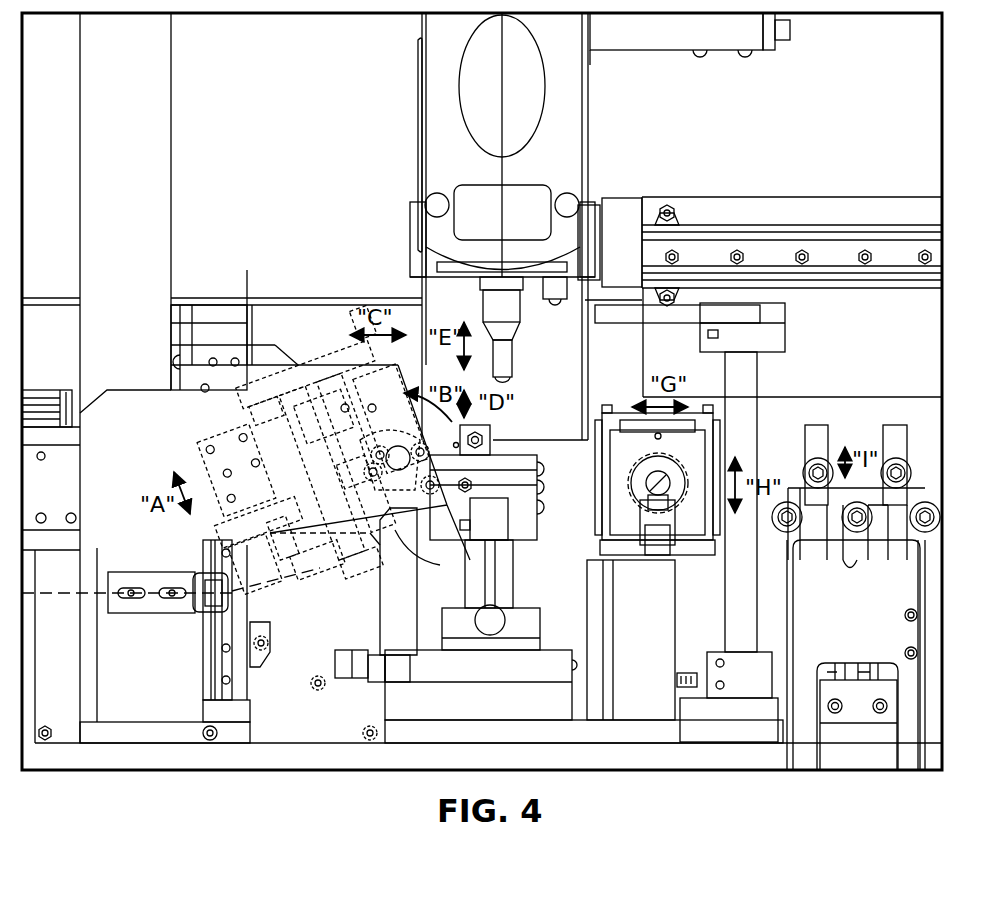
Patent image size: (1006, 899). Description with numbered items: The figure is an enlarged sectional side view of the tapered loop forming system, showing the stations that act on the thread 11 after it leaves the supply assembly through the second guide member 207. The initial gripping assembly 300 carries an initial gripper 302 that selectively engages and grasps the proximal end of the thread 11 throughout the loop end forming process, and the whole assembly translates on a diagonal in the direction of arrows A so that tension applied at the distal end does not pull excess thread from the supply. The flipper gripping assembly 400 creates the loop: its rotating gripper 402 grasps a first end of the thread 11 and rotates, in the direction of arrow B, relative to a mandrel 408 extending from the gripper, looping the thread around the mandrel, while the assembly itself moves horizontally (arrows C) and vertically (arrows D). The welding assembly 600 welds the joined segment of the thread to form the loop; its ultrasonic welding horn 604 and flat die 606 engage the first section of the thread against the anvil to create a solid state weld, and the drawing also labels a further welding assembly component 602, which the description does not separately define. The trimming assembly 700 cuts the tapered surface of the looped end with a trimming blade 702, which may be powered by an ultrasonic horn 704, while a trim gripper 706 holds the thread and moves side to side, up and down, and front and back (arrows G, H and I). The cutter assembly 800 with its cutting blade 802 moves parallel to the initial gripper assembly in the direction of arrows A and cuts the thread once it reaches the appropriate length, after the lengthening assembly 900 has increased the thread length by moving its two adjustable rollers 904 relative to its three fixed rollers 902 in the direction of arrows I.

The thread 11 is at (70, 596).
The second guide member 207 is at (197, 615).
The initial gripping assembly 300 is at (203, 428).
The initial gripper 302 is at (288, 560).
The flipper gripping assembly 400 is at (350, 358).
The rotating gripper 402 is at (372, 505).
The mandrel 408 is at (452, 528).
The welding assembly 600 is at (608, 178).
The slide 602 is at (510, 515).
The ultrasonic welding horn 604 is at (520, 310).
The flat die 606 is at (513, 378).
The trimming assembly 700 is at (733, 438).
The trimming blade 702 is at (648, 460).
The ultrasonic horn 704 is at (648, 480).
The trim gripper 706 is at (640, 515).
The cutter assembly 800 is at (252, 378).
The cutting blade 802 is at (313, 520).
The lengthening assembly 900 is at (866, 405).
The fixed rollers 902 is at (910, 565).
The adjustable rollers 904 is at (896, 455).